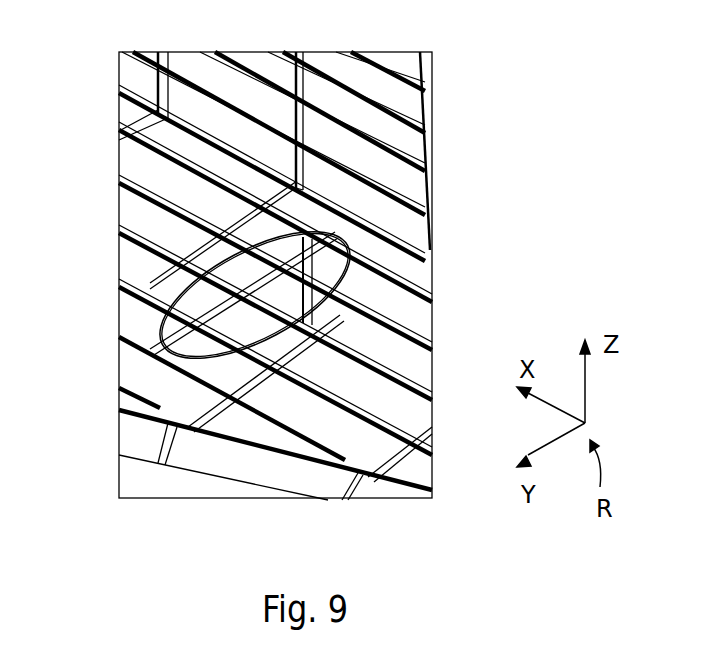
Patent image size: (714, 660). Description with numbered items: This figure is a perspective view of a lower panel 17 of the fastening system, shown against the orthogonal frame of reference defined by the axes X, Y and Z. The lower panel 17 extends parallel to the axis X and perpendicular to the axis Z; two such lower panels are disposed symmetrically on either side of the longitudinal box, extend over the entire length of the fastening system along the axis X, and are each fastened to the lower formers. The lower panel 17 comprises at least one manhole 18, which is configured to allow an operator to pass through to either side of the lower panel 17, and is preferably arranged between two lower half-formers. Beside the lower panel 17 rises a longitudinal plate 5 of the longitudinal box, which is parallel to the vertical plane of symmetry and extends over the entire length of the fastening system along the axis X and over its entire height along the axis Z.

The longitudinal plate 5 is at (395, 133).
The lower panel 17 is at (270, 423).
The manhole 18 is at (175, 340).